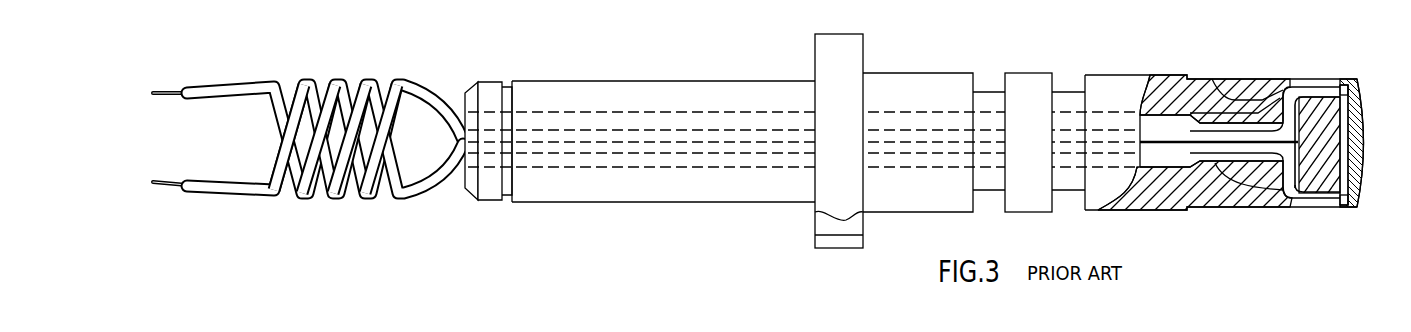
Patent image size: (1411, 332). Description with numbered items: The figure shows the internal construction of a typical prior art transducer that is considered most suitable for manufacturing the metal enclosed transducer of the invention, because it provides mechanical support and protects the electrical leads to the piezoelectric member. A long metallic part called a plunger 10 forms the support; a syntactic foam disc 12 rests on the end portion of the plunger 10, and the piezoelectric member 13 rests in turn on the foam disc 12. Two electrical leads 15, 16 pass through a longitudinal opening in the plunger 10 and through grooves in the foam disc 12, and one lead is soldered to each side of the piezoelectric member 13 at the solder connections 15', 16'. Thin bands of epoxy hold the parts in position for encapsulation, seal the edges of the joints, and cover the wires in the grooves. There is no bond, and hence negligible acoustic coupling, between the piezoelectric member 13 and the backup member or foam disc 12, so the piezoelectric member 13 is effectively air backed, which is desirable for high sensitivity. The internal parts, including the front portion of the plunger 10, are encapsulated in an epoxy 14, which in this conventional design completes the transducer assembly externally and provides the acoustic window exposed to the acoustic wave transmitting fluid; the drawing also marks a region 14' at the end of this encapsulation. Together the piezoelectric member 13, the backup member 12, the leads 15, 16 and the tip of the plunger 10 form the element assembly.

The plunger 10 is at (660, 80).
The syntactic foam disc 12 is at (1345, 108).
The piezoelectric member 13 is at (1352, 123).
The epoxy 14 is at (1198, 129).
The end cap insulation 14' is at (1375, 143).
The electrical lead 15 is at (308, 118).
The solder connection of lead 15' is at (1330, 117).
The electrical lead 16 is at (308, 161).
The solder connection of lead 16' is at (1338, 191).